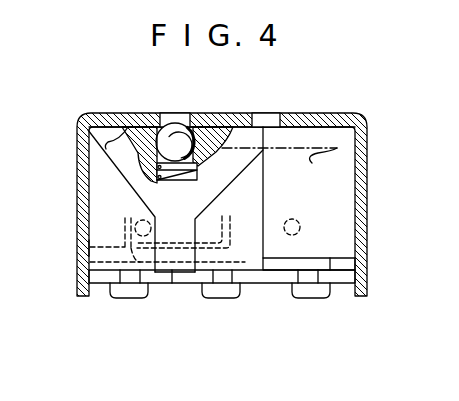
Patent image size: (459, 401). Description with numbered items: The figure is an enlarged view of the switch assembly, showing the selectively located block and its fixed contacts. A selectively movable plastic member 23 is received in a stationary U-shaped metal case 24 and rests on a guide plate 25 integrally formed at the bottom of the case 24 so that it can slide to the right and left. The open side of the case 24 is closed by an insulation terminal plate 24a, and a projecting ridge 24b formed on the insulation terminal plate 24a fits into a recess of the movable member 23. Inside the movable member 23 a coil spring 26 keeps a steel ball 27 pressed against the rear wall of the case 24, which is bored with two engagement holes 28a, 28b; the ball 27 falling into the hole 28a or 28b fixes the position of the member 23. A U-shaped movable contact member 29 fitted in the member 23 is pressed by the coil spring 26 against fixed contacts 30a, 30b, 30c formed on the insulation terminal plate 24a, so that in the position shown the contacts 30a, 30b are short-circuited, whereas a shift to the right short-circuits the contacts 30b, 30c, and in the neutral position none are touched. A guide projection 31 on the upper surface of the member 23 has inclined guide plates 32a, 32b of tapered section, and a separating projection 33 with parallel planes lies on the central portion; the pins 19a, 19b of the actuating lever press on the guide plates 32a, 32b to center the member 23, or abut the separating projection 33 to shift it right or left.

The pin 19a is at (135, 228).
The pin 19b is at (315, 210).
The selectively movable plastic member 23 is at (256, 262).
The stationary U-shaped metal case 24 is at (365, 194).
The insulation terminal plate 24a is at (342, 278).
The projecting ridge 24b is at (342, 258).
The guide plate 25 is at (279, 192).
The coil spring 26 is at (162, 181).
The steel ball 27 is at (213, 108).
The engagement hole 28a is at (177, 118).
The engagement hole 28b is at (262, 116).
The U-shaped movable contact member 29 is at (89, 247).
The fixed contact 30a is at (132, 298).
The fixed contact 30b is at (222, 298).
The fixed contact 30c is at (312, 298).
The guide projection 31 is at (235, 177).
The inclined guide plate 32a is at (117, 176).
The inclined guide plate 32b is at (197, 222).
The separating projection 33 is at (178, 233).